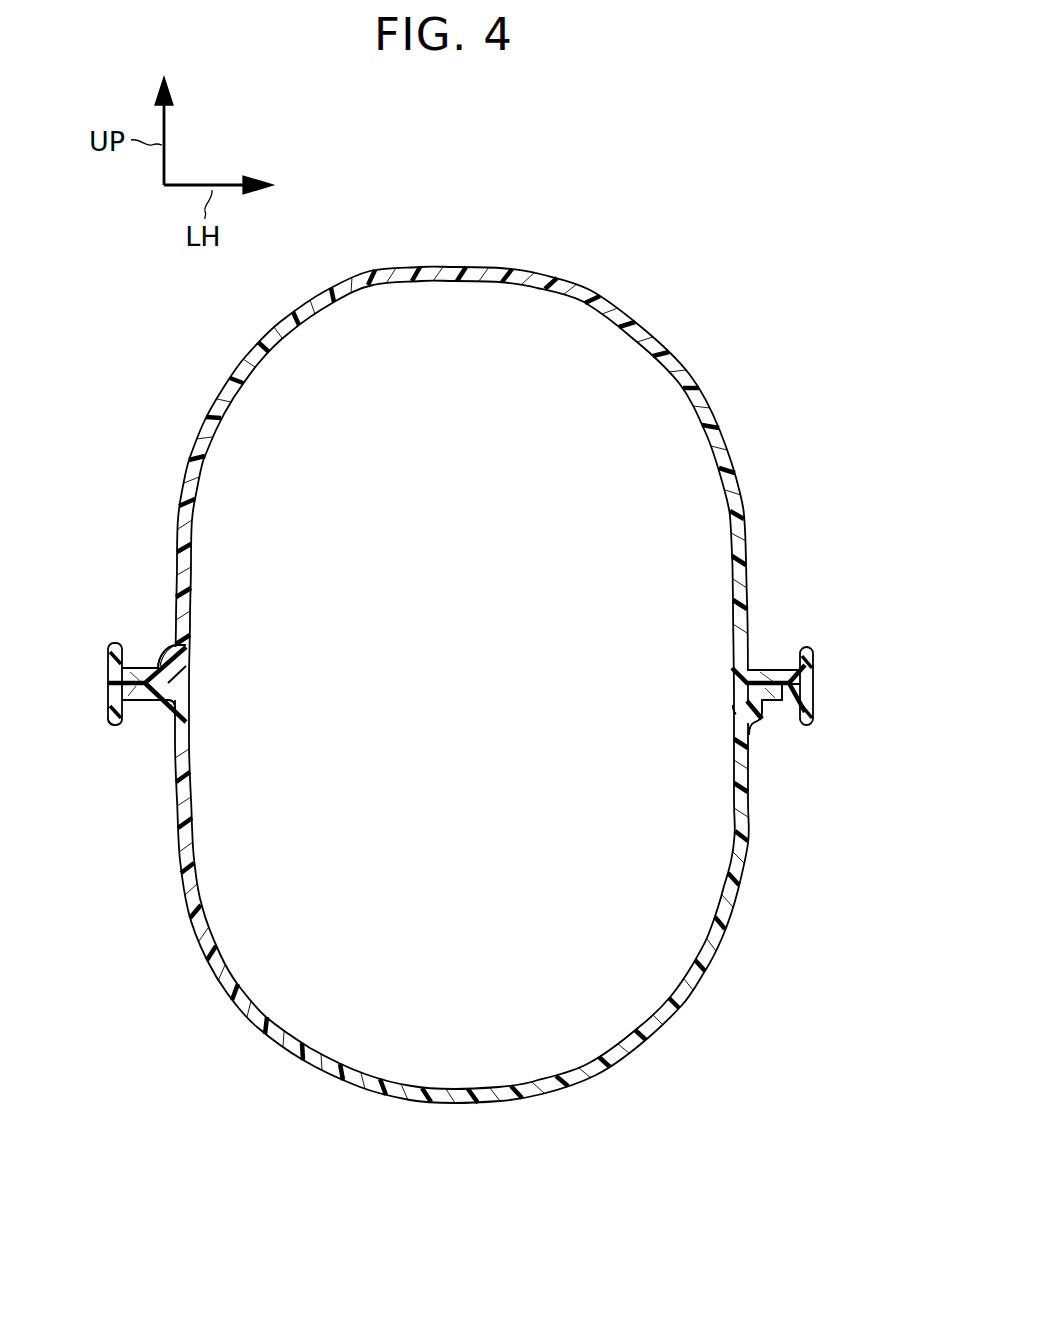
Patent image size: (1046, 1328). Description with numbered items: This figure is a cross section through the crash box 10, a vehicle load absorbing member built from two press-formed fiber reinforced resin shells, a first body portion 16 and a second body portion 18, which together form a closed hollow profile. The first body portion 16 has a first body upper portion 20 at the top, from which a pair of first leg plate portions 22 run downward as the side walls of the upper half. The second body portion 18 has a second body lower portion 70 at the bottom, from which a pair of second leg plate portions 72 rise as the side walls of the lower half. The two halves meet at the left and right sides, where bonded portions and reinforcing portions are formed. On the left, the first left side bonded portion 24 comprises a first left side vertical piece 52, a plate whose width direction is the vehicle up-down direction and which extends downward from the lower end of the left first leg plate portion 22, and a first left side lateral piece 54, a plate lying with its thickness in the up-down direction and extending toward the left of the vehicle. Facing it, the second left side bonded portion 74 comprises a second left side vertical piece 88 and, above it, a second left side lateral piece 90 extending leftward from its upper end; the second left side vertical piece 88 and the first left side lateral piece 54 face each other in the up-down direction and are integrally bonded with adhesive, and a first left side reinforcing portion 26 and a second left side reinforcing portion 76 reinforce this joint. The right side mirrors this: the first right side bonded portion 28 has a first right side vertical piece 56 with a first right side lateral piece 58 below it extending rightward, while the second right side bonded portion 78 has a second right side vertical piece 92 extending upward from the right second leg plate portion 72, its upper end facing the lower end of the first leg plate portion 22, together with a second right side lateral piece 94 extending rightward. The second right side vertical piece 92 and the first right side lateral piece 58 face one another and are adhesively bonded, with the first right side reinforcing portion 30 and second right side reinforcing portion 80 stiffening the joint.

The crash box 10 is at (709, 228).
The first body portion 16 is at (739, 437).
The second body portion 18 is at (727, 959).
The first body upper portion 20 is at (497, 268).
The first leg plate portions 22 is at (192, 556).
The first left side bonded portion 24 is at (712, 673).
The first left side reinforcing portion 26 is at (816, 653).
The first right side bonded portion 28 is at (183, 609).
The first right side reinforcing portion 30 is at (108, 660).
The first left side vertical piece 52 is at (732, 700).
The first left side lateral piece 54 is at (752, 665).
The first right side vertical piece 56 is at (172, 650).
The first right side lateral piece 58 is at (140, 664).
The second body lower portion 70 is at (453, 1104).
The second leg plate portions 72 is at (174, 793).
The second left side bonded portion 74 is at (784, 746).
The second left side reinforcing portion 76 is at (816, 700).
The second right side bonded portion 78 is at (214, 693).
The second right side reinforcing portion 80 is at (108, 715).
The second left side vertical piece 88 is at (759, 727).
The second left side lateral piece 90 is at (766, 705).
The second right side vertical piece 92 is at (190, 675).
The second right side lateral piece 94 is at (145, 700).